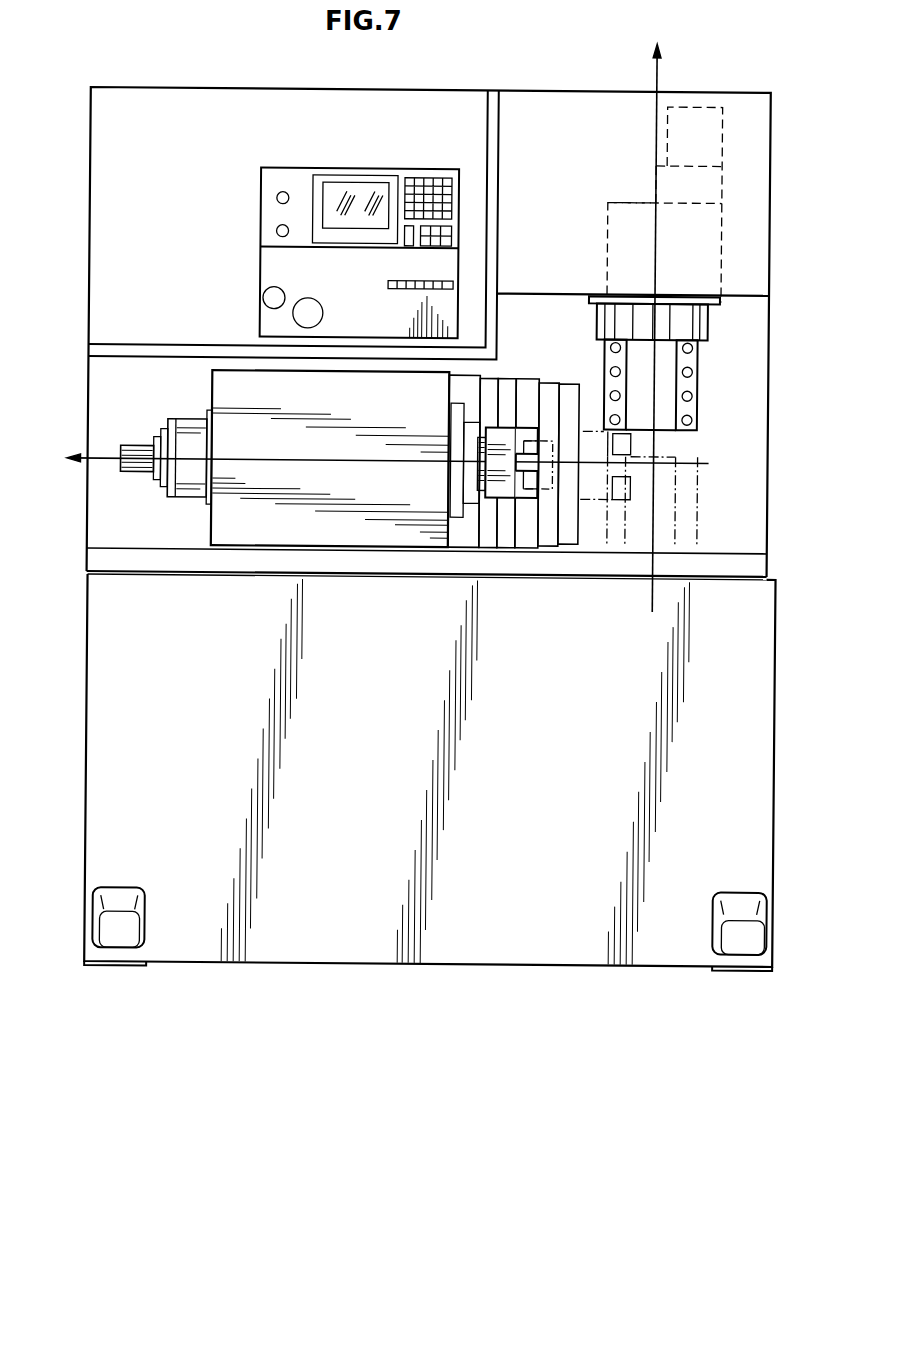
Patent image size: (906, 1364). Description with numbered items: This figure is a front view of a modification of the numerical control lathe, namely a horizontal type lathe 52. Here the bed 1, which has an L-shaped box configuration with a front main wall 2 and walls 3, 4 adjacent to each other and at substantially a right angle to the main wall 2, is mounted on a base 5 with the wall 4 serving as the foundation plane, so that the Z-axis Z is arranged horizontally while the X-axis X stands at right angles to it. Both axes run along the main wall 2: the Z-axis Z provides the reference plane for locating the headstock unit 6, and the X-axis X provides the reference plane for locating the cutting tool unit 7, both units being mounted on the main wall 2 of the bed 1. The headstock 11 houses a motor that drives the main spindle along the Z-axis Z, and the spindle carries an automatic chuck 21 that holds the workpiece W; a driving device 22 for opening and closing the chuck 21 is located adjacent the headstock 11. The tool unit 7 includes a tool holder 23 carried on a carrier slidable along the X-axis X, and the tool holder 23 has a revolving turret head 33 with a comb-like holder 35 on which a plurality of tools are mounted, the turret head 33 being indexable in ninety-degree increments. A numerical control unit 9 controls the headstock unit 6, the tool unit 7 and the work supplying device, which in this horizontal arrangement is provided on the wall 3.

The bed 1 is at (86, 385).
The horizontal type lathe 52 is at (86, 216).
The numerical control unit 9 is at (200, 100).
The wall 3 is at (767, 357).
The tool unit 7 is at (720, 240).
The tool holder 23 is at (607, 250).
The turret head 33 is at (633, 372).
The comb-like holder 35 is at (695, 404).
The front main wall 2 is at (745, 512).
The wall 4 is at (124, 573).
The headstock unit 6 is at (253, 400).
The headstock 11 is at (333, 531).
The driving device 22 is at (190, 490).
The automatic chuck 21 is at (507, 478).
The workpiece W is at (548, 490).
The base 5 is at (90, 792).
The X-axis X is at (654, 315).
The Z-axis Z is at (376, 463).